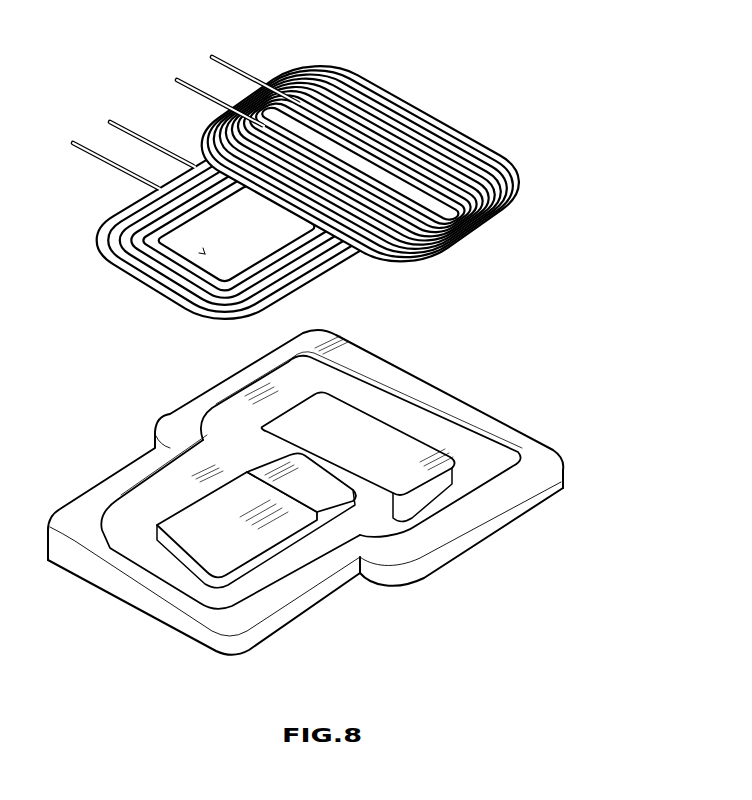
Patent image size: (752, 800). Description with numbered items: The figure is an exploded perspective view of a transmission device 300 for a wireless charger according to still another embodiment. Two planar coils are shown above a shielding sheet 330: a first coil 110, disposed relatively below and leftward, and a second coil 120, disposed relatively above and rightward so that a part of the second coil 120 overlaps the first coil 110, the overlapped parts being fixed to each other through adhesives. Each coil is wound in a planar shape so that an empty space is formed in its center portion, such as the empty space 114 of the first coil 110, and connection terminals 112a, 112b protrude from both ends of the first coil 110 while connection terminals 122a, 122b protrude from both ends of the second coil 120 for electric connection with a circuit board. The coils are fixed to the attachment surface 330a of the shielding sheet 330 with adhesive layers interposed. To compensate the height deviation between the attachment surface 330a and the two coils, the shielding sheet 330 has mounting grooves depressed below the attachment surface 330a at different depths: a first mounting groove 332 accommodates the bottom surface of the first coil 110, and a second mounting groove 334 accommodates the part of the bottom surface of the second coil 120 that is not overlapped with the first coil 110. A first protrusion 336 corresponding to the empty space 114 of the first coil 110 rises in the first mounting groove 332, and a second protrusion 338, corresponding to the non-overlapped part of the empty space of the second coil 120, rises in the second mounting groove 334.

The first coil 110 is at (107, 243).
The connection terminal 112a is at (82, 140).
The connection terminal 112b is at (138, 132).
The empty space 114 is at (205, 254).
The second coil 120 is at (430, 106).
The connection terminal 122a is at (182, 78).
The connection terminal 122b is at (248, 70).
The transmission device for a wireless charger 300 is at (553, 161).
The shielding sheet 330 is at (319, 495).
The attachment surface 330a is at (205, 610).
The first mounting groove 332 is at (283, 573).
The second mounting groove 334 is at (458, 499).
The first protrusion 336 is at (190, 526).
The second protrusion 338 is at (400, 440).